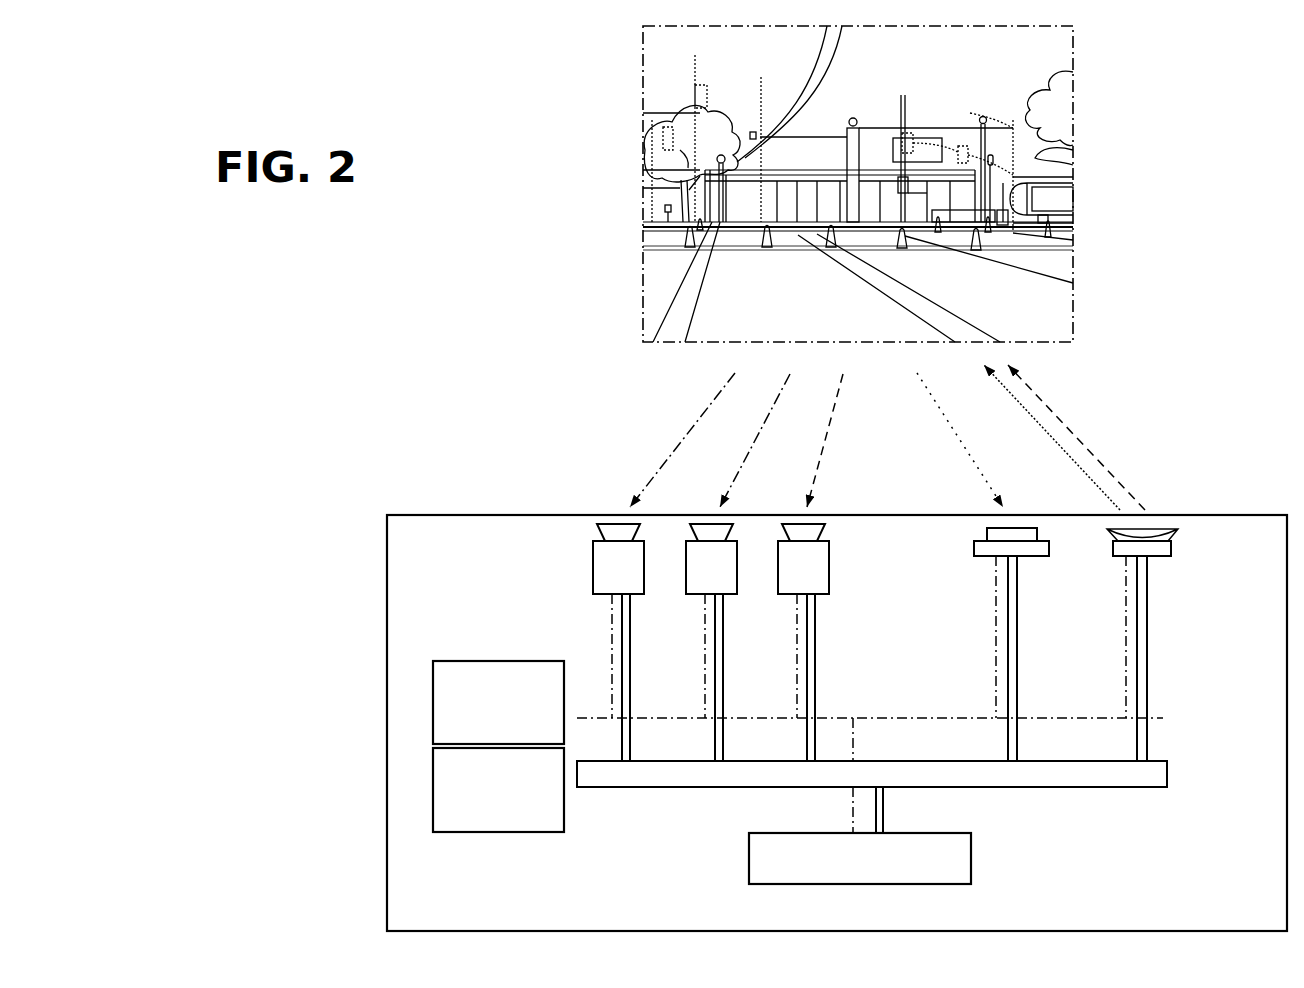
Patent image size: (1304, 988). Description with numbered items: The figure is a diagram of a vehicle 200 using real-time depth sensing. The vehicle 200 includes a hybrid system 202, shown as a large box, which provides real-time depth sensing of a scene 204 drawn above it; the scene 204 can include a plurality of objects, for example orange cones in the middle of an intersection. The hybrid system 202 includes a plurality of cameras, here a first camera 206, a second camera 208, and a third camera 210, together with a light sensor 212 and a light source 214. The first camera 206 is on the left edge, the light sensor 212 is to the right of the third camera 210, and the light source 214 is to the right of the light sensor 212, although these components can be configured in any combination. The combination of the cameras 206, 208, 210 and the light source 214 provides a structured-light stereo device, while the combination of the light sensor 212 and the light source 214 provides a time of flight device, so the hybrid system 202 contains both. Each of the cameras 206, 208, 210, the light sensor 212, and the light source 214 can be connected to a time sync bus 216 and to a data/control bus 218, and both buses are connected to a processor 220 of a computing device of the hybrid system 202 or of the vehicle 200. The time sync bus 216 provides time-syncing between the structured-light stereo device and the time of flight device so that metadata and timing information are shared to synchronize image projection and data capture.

The vehicle 200 is at (483, 488).
The hybrid system 202 is at (1100, 872).
The scene 204 is at (642, 108).
The first camera 206 is at (637, 577).
The second camera 208 is at (730, 577).
The third camera 210 is at (822, 577).
The light sensor 212 is at (974, 548).
The light source 214 is at (1171, 548).
The time sync bus 216 is at (518, 716).
The data/control bus 218 is at (518, 799).
The processor 220 is at (880, 872).